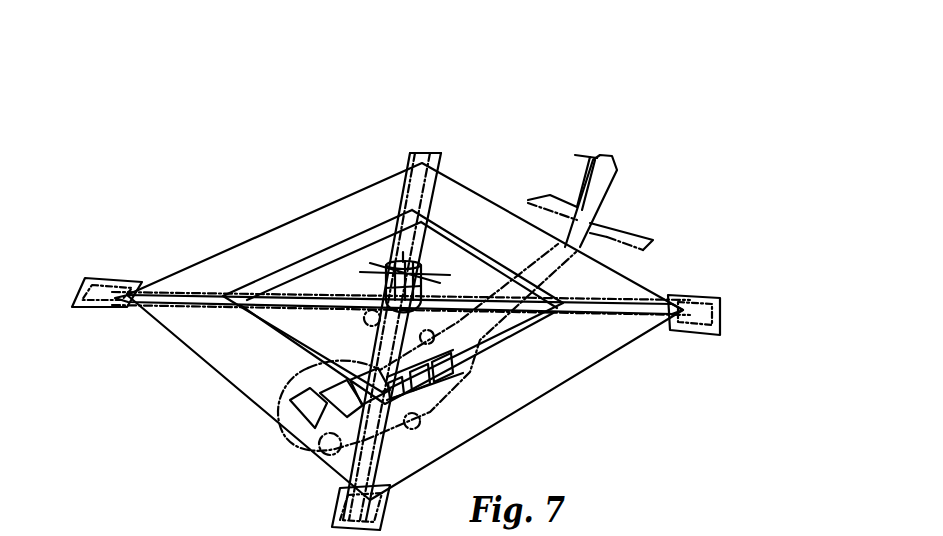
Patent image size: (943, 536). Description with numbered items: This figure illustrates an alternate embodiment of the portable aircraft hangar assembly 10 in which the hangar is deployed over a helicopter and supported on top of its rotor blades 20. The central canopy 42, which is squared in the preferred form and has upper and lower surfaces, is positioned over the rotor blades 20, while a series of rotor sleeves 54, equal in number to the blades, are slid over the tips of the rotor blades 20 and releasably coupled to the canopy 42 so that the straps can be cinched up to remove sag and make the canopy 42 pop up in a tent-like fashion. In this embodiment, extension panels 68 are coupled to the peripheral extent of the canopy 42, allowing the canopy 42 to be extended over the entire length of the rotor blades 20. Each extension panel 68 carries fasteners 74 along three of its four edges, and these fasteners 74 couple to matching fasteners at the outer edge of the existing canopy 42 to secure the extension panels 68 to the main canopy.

The portable aircraft hangar assembly 10 is at (285, 178).
The rotor blades 20 is at (176, 294).
The canopy 42 is at (385, 255).
The rotor sleeves 54 is at (101, 278).
The extension panels 68 is at (472, 205).
The fasteners 74 is at (182, 534).